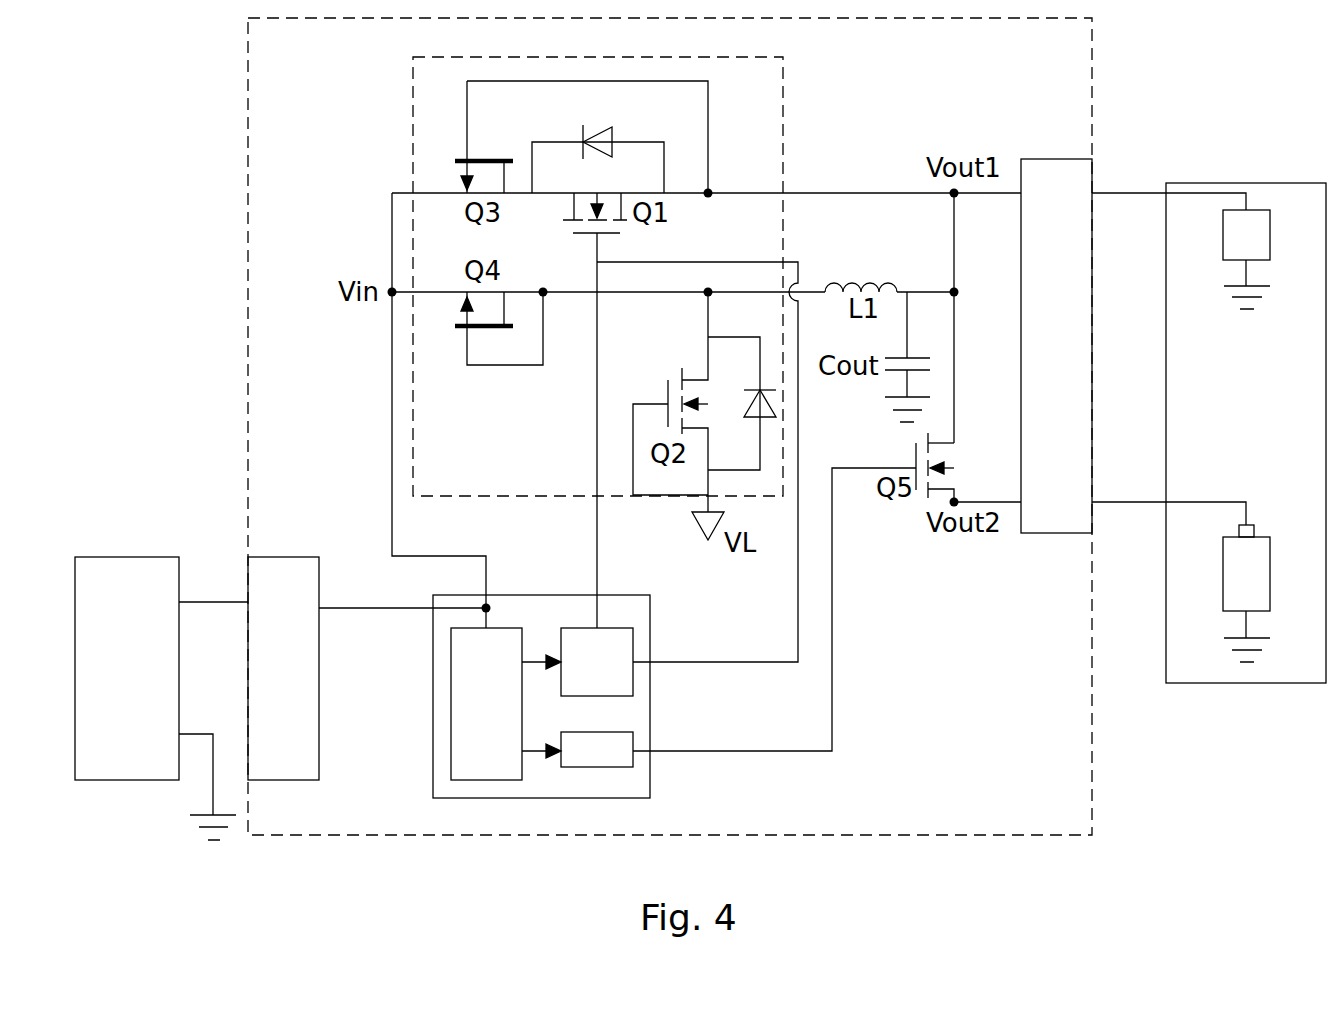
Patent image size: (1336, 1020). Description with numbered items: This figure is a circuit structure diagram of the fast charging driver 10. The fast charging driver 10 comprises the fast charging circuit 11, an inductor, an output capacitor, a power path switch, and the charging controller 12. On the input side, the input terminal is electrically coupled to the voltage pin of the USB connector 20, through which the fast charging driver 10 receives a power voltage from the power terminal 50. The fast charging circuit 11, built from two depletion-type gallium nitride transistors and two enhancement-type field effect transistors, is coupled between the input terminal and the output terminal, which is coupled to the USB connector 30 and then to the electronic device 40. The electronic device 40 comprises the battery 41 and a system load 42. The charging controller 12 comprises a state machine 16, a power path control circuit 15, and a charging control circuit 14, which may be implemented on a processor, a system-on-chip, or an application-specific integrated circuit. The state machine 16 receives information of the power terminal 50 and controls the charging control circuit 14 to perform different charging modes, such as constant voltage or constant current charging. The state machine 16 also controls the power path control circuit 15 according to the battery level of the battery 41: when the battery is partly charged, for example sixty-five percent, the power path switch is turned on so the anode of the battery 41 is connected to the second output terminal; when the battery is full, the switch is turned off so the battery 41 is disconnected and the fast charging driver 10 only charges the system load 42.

The fast charging driver 10 is at (248, 140).
The fast charging circuit 11 is at (413, 123).
The charging controller 12 is at (465, 798).
The charging control circuit 14 is at (614, 677).
The power path control circuit 15 is at (614, 765).
The state machine 16 is at (503, 719).
The USB connector 20 is at (300, 685).
The USB connector 30 is at (1074, 361).
The electronic device 40 is at (1290, 683).
The battery 41 is at (1264, 589).
The system load 42 is at (1264, 251).
The power terminal 50 is at (115, 780).